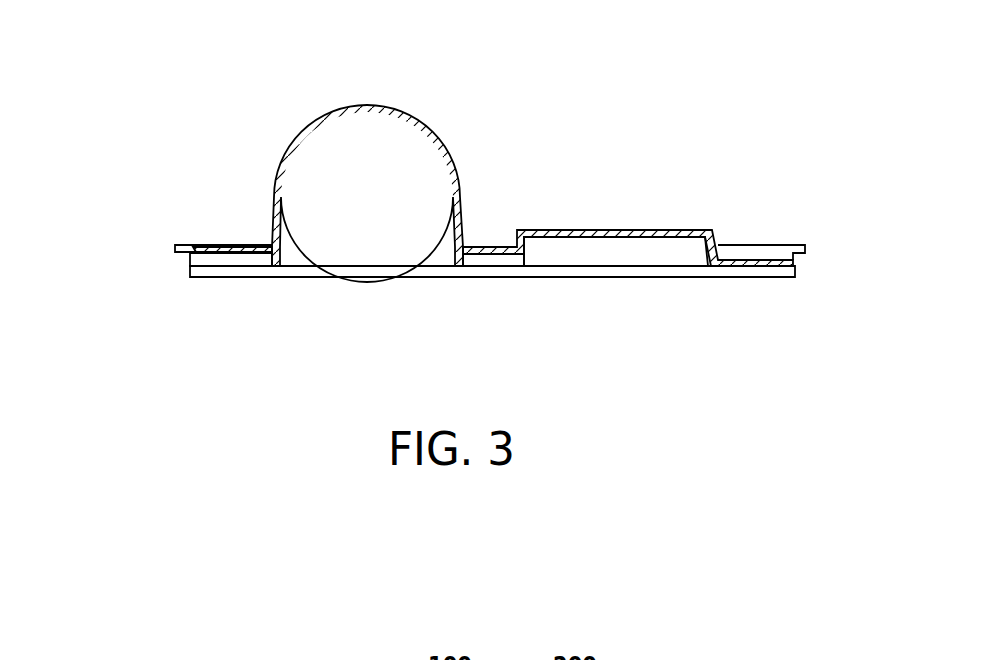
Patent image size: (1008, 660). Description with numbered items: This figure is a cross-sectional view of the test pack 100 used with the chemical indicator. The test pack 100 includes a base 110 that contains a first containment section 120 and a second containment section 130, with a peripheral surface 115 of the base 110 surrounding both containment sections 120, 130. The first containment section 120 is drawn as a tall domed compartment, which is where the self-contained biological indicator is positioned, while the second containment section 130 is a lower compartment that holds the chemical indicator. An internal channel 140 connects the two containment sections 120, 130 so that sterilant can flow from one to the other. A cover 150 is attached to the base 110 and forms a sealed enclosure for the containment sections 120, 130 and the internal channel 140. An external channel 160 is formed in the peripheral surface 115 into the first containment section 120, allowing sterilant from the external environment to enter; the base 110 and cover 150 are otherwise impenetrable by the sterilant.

The test pack 100 is at (437, 195).
The base 110 is at (273, 212).
The peripheral surface 115 is at (190, 256).
The first containment section 120 is at (373, 216).
The second containment section 130 is at (617, 250).
The internal channel 140 is at (487, 262).
The cover 150 is at (540, 277).
The external channel 160 is at (238, 263).